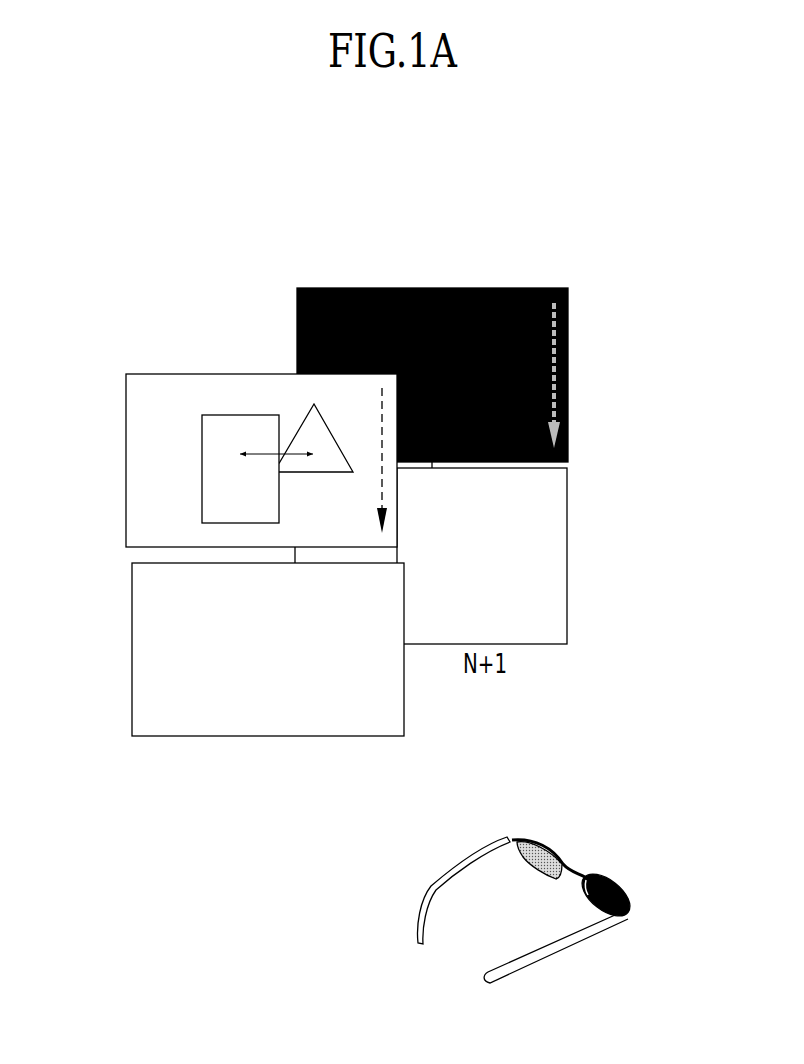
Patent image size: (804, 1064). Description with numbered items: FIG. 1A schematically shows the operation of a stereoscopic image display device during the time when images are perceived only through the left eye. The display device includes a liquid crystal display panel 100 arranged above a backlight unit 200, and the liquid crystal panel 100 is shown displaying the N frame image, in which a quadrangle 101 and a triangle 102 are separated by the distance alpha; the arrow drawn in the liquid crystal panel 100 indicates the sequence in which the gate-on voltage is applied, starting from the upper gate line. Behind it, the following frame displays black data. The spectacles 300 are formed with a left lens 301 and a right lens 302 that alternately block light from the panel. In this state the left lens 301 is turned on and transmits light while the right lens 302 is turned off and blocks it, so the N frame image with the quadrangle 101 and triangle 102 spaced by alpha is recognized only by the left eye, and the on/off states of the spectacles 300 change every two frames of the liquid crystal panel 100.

The display panel 100 is at (143, 462).
The quadrangle 101 is at (217, 427).
The triangle 102 is at (313, 404).
The backlight unit 200 is at (145, 665).
The spectacles 300 is at (547, 957).
The left lens 301 is at (545, 852).
The right lens 302 is at (618, 887).